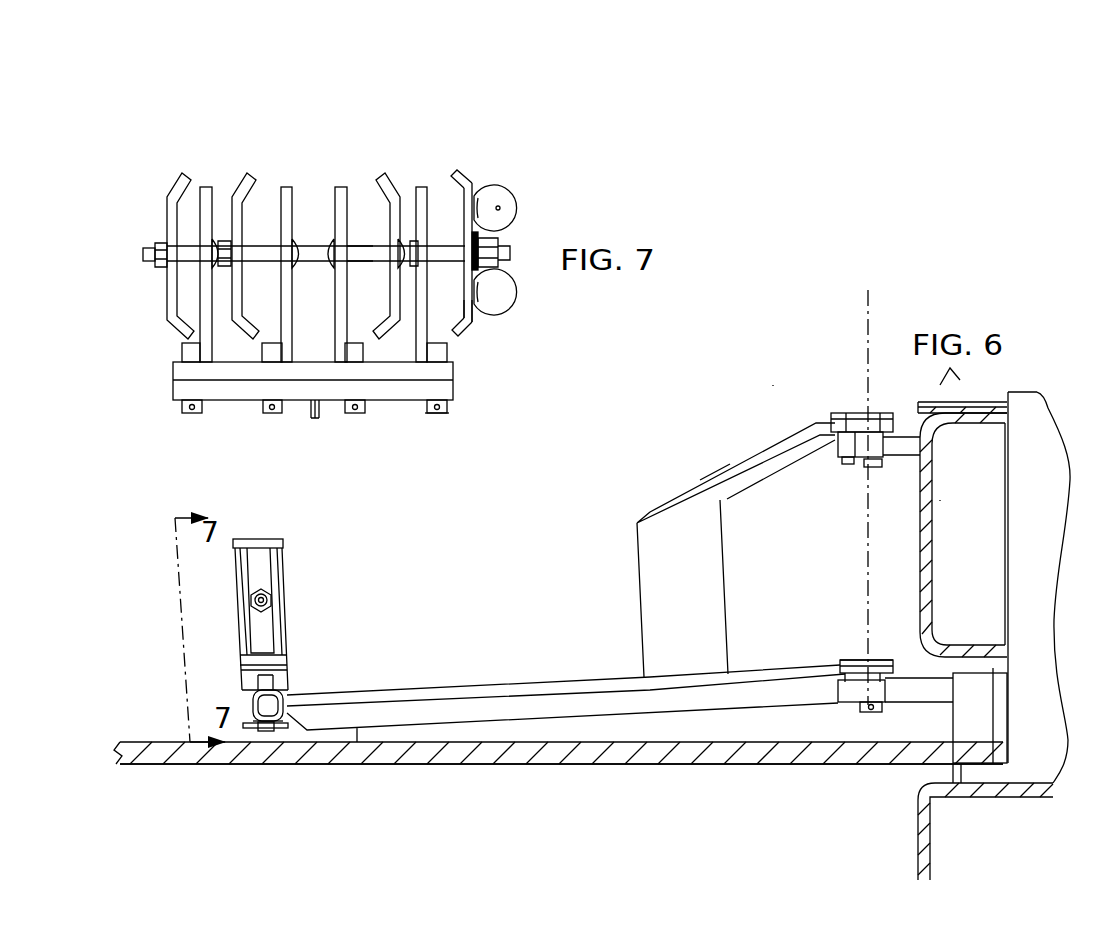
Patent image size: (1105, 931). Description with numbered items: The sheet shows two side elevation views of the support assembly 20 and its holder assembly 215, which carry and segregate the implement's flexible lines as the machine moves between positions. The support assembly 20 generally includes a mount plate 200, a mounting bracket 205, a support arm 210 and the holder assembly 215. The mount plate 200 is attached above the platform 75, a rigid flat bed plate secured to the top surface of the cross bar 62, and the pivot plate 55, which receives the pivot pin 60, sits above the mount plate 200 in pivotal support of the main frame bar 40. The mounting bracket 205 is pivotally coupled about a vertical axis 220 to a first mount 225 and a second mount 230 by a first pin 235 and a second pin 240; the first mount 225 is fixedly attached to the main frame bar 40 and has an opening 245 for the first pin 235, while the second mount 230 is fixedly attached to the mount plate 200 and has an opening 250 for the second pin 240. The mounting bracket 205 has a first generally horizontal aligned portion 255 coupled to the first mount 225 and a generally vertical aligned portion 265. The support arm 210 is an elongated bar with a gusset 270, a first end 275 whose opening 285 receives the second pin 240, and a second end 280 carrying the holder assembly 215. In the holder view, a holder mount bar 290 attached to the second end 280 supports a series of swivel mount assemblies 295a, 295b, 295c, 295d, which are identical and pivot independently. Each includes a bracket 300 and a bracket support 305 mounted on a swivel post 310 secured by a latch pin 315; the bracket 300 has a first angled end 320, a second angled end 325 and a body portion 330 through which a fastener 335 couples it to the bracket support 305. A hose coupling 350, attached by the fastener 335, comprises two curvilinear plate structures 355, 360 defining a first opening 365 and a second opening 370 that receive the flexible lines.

In FIG. 6, the support assembly 20 is at (774, 386).
In FIG. 6, the main frame bar 40 is at (918, 487).
In FIG. 6, the pivot plate 55 is at (993, 668).
In FIG. 6, the pivot pin 60 is at (1022, 392).
In FIG. 6, the cross bar 62 is at (917, 828).
In FIG. 6, the platform 75 is at (517, 765).
In FIG. 6, the mount plate 200 is at (920, 703).
In FIG. 6, the mounting bracket 205 is at (710, 532).
In FIG. 6, the support arm 210 is at (477, 687).
In FIG. 7, the holder assembly 215 is at (575, 192).
In FIG. 6, the holder assembly 215 is at (274, 647).
In FIG. 6, the vertical axis 220 is at (875, 297).
In FIG. 6, the first mount 225 is at (808, 470).
In FIG. 6, the second mount 230 is at (848, 718).
In FIG. 6, the first pin 235 is at (858, 467).
In FIG. 6, the second pin 240 is at (858, 711).
In FIG. 6, the opening 245 is at (918, 411).
In FIG. 6, the opening 250 is at (945, 634).
In FIG. 6, the first generally horizontal aligned portion 255 is at (733, 460).
In FIG. 6, the generally vertical aligned portion 265 is at (634, 593).
In FIG. 7, the gusset 270 is at (318, 420).
In FIG. 6, the gusset 270 is at (357, 760).
In FIG. 6, the first end 275 is at (827, 660).
In FIG. 6, the second end 280 is at (297, 736).
In FIG. 6, the opening 285 is at (848, 673).
In FIG. 7, the holder mount bar 290 is at (400, 403).
In FIG. 6, the holder mount bar 290 is at (288, 692).
In FIG. 7, the swivel mount assembly 295a is at (208, 162).
In FIG. 7, the swivel mount assembly 295b is at (285, 137).
In FIG. 7, the swivel mount assembly 295c is at (365, 162).
In FIG. 7, the swivel mount assembly 295d is at (494, 225).
In FIG. 7, the bracket 300 is at (465, 225).
In FIG. 6, the bracket 300 is at (282, 541).
In FIG. 7, the bracket support 305 is at (410, 232).
In FIG. 7, the swivel post 310 is at (440, 418).
In FIG. 6, the swivel post 310 is at (267, 732).
In FIG. 7, the latch pin 315 is at (437, 415).
In FIG. 6, the latch pin 315 is at (245, 730).
In FIG. 7, the first angled end 320 is at (457, 175).
In FIG. 6, the first angled end 320 is at (233, 543).
In FIG. 7, the second angled end 325 is at (458, 344).
In FIG. 6, the second angled end 325 is at (236, 678).
In FIG. 7, the body portion 330 is at (462, 210).
In FIG. 7, the fastener 335 is at (470, 305).
In FIG. 6, the fastener 335 is at (271, 590).
In FIG. 7, the hose coupling 350 is at (523, 222).
In FIG. 6, the hose coupling 350 is at (284, 556).
In FIG. 7, the plate structure 355 is at (516, 192).
In FIG. 6, the plate structure 355 is at (243, 577).
In FIG. 7, the plate structure 360 is at (518, 297).
In FIG. 6, the plate structure 360 is at (286, 633).
In FIG. 7, the first opening 365 is at (495, 208).
In FIG. 7, the second opening 370 is at (497, 293).